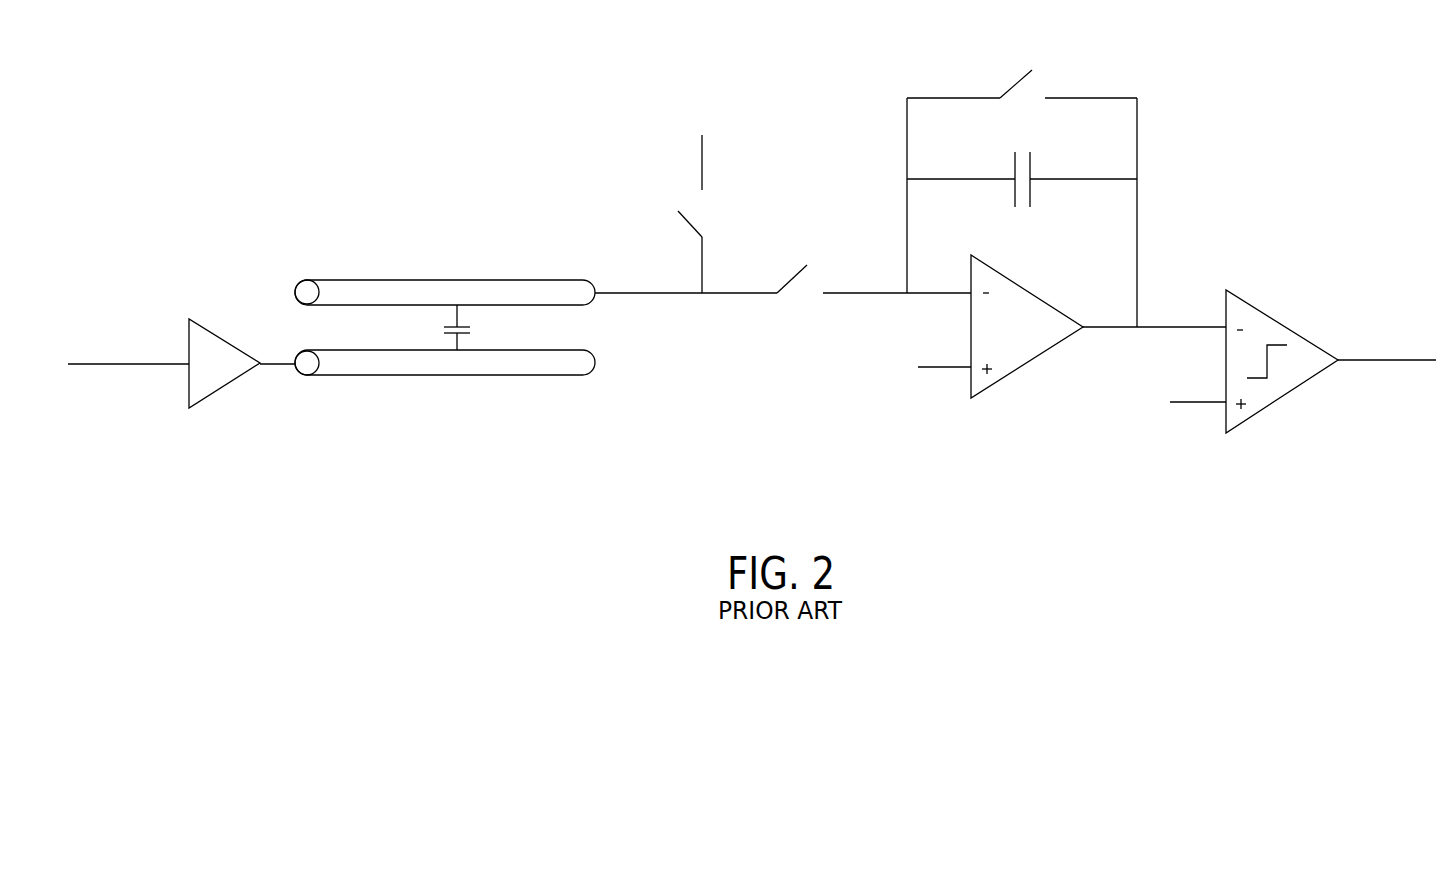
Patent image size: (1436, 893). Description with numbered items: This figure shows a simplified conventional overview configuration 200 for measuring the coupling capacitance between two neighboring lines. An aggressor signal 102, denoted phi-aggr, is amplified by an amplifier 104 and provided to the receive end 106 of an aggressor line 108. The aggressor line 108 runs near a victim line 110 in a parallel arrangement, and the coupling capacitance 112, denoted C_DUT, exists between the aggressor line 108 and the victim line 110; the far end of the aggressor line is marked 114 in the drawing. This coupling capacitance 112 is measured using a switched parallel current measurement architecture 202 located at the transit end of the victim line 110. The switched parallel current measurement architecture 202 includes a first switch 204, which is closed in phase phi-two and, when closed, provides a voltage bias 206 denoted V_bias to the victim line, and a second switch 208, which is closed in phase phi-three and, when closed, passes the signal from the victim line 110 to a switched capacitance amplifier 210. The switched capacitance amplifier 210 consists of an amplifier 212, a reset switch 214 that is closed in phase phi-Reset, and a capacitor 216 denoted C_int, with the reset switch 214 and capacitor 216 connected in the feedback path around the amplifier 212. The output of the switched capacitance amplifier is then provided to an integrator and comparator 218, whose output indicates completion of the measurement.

The simplified conventional overview configuration 200 is at (292, 123).
The aggressor signal 102 is at (95, 366).
The amplifier 104 is at (240, 382).
The receive end 106 is at (300, 355).
The aggressor line 108 is at (512, 416).
The victim line 110 is at (500, 252).
The coupling capacitance 112 is at (452, 302).
The aggressor line far end 114 is at (583, 374).
The switched parallel current measurement architecture 202 is at (655, 75).
The switch 1 204 is at (676, 207).
The voltage bias 206 is at (728, 117).
The switch 2 208 is at (790, 286).
The switched capacitance amplifier 210 is at (878, 78).
The amplifier 212 is at (1003, 384).
The switch 214 is at (1015, 82).
The capacitor 216 is at (1036, 238).
The integrator and comparator 218 is at (1268, 404).